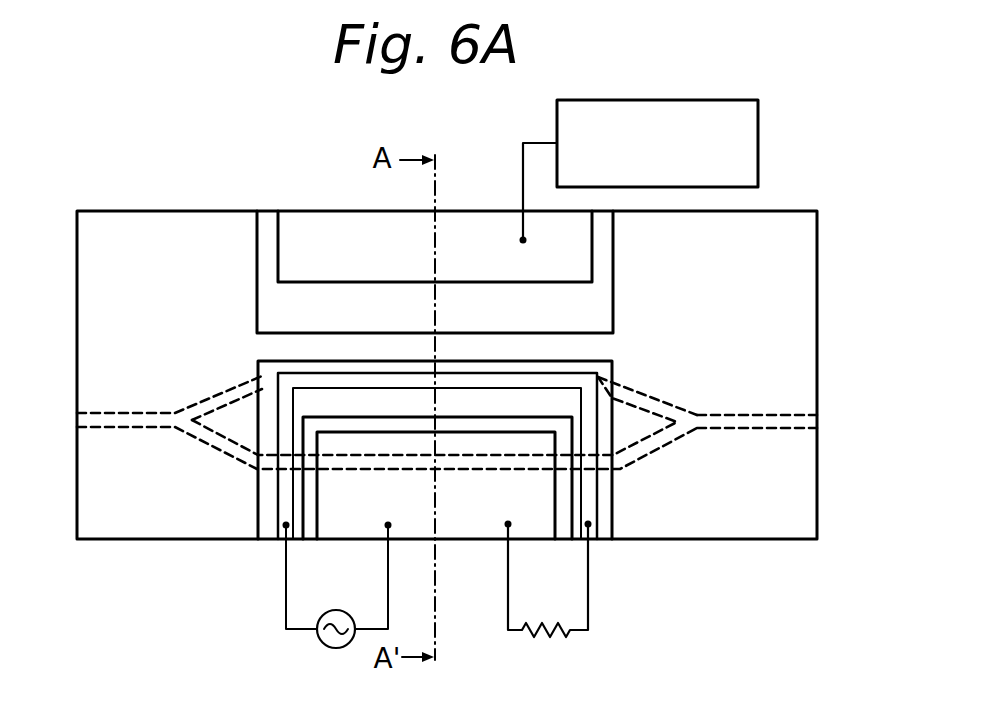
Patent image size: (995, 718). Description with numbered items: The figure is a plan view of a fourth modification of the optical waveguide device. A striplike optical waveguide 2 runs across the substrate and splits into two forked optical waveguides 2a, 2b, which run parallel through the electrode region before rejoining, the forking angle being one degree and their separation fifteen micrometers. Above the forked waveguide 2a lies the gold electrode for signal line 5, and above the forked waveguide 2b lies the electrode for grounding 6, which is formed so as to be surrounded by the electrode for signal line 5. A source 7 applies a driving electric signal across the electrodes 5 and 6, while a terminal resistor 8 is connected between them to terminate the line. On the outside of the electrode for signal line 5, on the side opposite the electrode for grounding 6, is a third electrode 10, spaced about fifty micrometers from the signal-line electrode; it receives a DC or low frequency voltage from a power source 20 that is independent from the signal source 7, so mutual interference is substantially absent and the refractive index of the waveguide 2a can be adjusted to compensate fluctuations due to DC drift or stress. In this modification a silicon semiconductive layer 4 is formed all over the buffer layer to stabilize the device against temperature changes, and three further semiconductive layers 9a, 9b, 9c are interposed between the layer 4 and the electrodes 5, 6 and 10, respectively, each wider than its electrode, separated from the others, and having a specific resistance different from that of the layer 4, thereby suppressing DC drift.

The optical waveguide 2 is at (76, 413).
The forked optical waveguide 2a is at (436, 291).
The forked optical waveguide 2b is at (229, 453).
The semiconductive layer 4 is at (562, 530).
The electrode for signal line 5 is at (588, 500).
The electrode for grounding 6 is at (477, 510).
The source 7 is at (318, 642).
The terminal resistor 8 is at (548, 601).
The semiconductive layer 9a is at (267, 527).
The semiconductive layer 9b is at (418, 500).
The semiconductive layer 9c is at (268, 222).
The third electrode 10 is at (306, 222).
The power source 20 is at (557, 112).